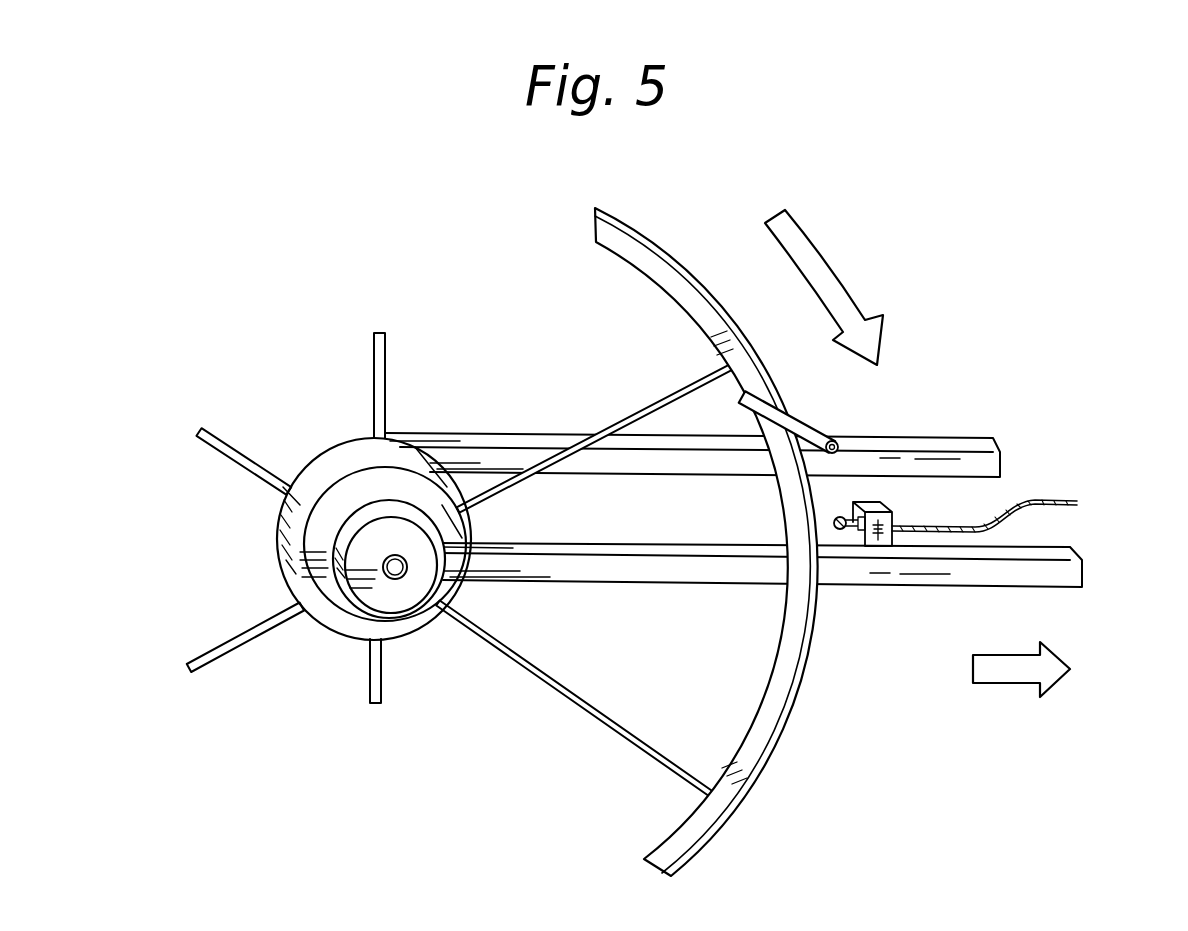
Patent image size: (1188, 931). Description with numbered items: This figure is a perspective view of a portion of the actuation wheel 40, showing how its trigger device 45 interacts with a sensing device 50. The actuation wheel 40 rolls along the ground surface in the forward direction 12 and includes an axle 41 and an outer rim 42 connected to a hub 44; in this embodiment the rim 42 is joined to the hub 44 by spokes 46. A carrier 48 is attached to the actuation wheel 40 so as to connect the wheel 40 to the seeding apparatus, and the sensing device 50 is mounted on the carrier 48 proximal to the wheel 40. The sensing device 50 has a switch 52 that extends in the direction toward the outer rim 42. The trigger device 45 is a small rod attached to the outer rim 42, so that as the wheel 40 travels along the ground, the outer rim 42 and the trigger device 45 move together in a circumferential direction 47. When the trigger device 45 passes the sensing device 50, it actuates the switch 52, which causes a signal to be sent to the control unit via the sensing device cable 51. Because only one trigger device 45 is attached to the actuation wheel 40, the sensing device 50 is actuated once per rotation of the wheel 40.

The forward direction 12 is at (1020, 673).
The actuation wheel 40 is at (318, 217).
The axle 41 is at (390, 579).
The outer rim 42 is at (780, 737).
The hub 44 is at (277, 526).
The trigger device 45 is at (817, 433).
The spokes 46 is at (386, 362).
The circumferential direction 47 is at (813, 233).
The carrier 48 is at (967, 437).
The sensing device 50 is at (878, 546).
The sensing device cable 51 is at (1050, 497).
The switch 52 is at (840, 532).